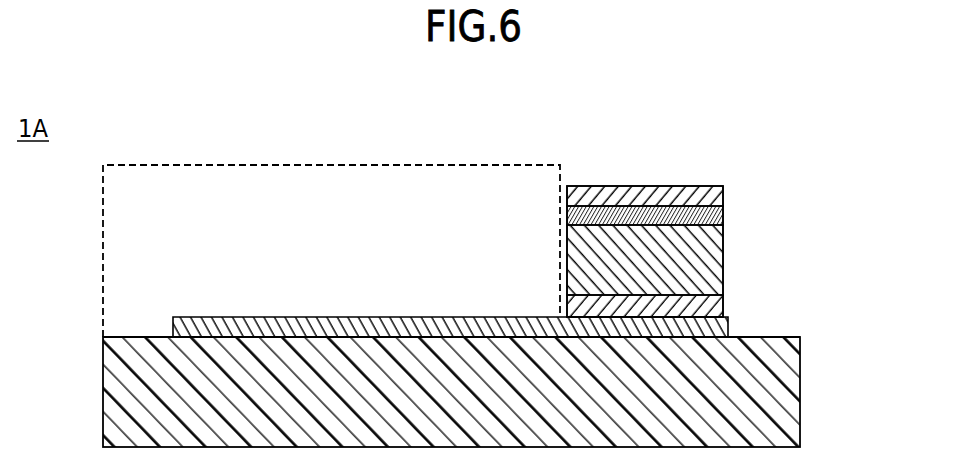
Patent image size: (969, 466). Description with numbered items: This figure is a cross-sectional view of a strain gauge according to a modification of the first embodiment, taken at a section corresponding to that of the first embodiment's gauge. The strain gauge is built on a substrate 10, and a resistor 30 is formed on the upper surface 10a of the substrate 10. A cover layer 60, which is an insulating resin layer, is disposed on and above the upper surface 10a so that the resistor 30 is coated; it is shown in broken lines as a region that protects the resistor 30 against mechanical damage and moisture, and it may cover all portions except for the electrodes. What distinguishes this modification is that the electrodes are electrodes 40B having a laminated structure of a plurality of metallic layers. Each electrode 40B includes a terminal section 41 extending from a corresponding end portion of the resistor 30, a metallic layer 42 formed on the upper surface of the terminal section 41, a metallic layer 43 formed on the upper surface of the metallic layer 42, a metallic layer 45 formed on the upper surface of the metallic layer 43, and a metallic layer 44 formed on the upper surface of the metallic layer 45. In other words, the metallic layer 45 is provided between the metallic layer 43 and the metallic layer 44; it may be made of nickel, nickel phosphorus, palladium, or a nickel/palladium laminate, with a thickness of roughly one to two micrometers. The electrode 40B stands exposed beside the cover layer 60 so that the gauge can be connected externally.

The substrate 10 is at (124, 398).
The upper surface of the substrate 10a is at (137, 337).
The resistor 30 is at (553, 308).
The electrode 40B is at (853, 182).
The terminal section 41 is at (566, 340).
The metallic layer 42 is at (723, 301).
The metallic layer 43 is at (723, 257).
The metallic layer 44 is at (723, 194).
The metallic layer 45 is at (723, 217).
The cover layer 60 is at (440, 165).